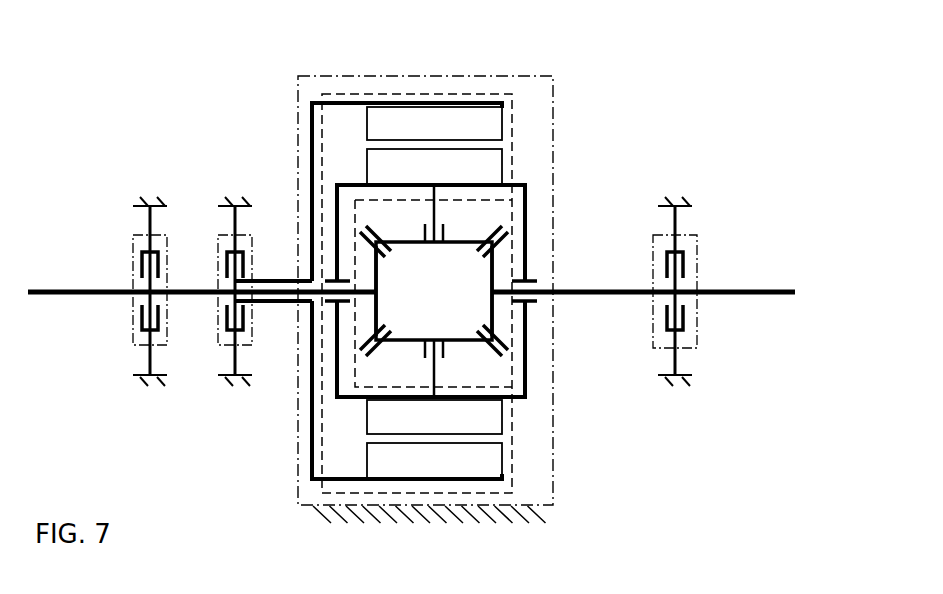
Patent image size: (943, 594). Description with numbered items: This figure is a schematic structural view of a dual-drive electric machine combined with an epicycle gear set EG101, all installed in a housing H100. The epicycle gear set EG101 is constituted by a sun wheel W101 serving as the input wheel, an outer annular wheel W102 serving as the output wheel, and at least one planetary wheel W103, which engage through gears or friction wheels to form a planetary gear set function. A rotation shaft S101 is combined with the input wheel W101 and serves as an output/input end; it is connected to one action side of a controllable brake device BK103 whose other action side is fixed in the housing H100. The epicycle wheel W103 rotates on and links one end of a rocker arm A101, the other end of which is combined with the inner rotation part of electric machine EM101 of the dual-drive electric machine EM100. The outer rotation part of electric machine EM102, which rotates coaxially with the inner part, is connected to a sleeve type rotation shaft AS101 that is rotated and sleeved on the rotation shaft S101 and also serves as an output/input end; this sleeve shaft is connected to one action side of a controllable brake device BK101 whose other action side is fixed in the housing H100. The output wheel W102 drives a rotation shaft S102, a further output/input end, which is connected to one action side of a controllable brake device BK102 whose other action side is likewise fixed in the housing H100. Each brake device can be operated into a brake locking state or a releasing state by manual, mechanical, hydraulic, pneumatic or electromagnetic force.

The rotation shaft S101 is at (90, 288).
The rotation shaft S102 is at (752, 288).
The sleeve type rotation shaft AS101 is at (263, 302).
The controllable brake device BK101 is at (218, 248).
The controllable brake device BK102 is at (698, 265).
The controllable brake device BK103 is at (133, 248).
The housing H100 is at (155, 387).
The epicycle gear set EG101 is at (556, 148).
The dual-drive electric machine EM100 is at (458, 93).
The inner rotation part of electric machine EM101 is at (380, 167).
The outer rotation part of electric machine EM102 is at (434, 120).
The rocker arm A101 is at (434, 372).
The sun wheel W101 is at (377, 268).
The outer annular wheel W102 is at (490, 310).
The planetary wheel W103 is at (494, 228).